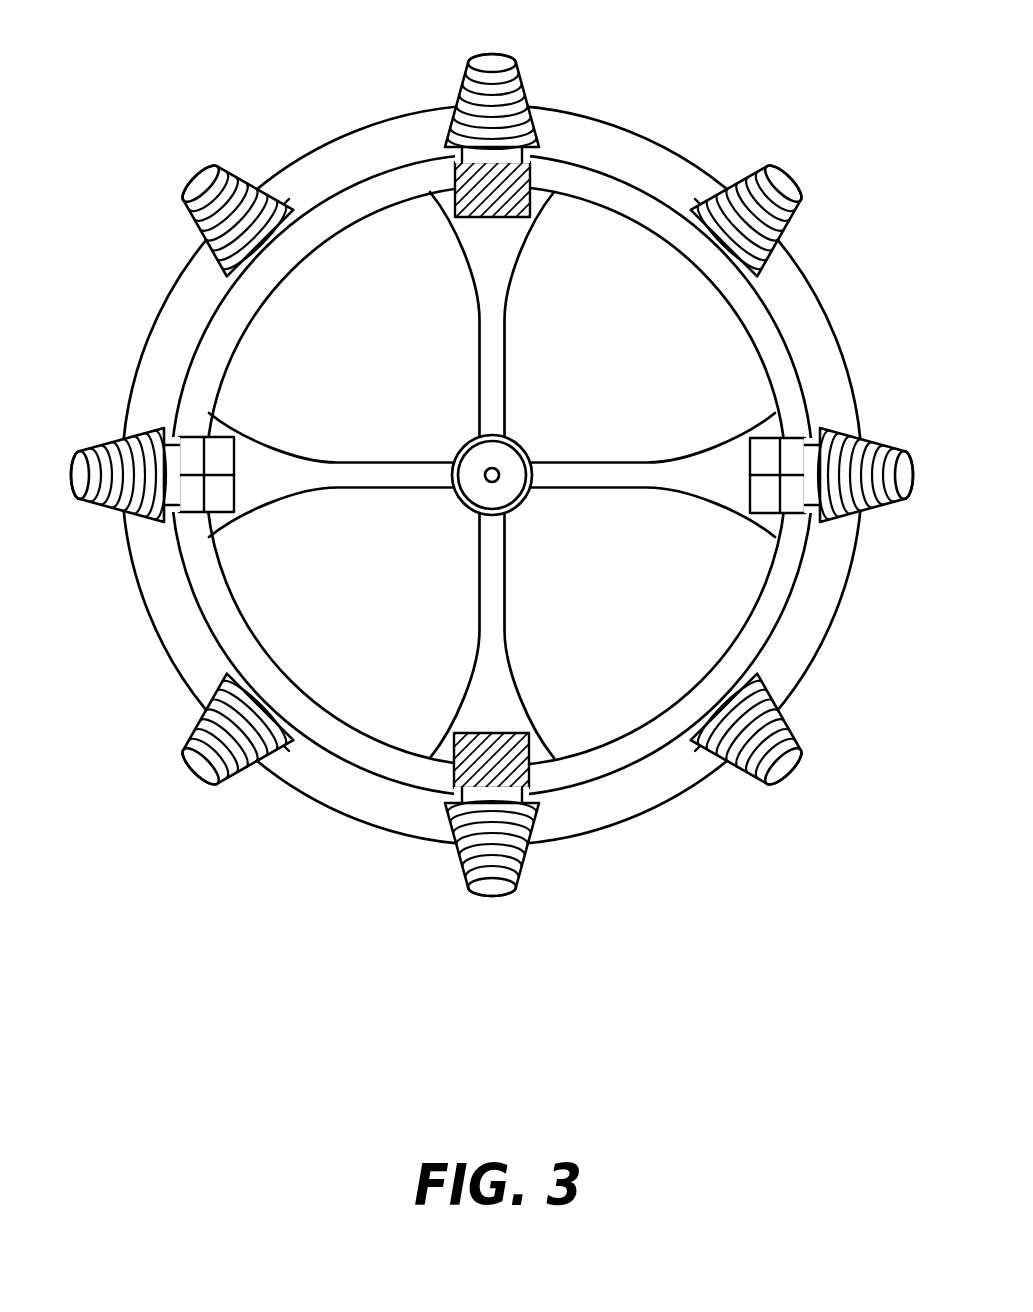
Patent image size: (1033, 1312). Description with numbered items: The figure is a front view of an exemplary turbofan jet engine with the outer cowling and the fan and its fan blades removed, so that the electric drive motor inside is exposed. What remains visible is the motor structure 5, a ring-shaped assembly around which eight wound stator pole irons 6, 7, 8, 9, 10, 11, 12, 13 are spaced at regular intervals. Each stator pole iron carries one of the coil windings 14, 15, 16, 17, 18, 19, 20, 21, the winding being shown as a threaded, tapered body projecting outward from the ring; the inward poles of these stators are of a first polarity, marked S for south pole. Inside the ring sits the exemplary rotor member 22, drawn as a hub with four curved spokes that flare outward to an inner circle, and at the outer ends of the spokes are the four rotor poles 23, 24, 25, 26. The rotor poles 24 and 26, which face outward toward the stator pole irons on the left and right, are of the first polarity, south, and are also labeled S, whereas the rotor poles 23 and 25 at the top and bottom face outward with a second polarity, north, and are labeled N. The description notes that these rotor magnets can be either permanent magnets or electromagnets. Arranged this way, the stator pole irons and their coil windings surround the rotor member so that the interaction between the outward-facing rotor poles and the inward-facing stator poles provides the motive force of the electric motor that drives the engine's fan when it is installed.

The motor structure 5 is at (818, 290).
The wound stator pole iron 6 is at (492, 86).
The wound stator pole iron 7 is at (756, 211).
The wound stator pole iron 8 is at (877, 475).
The wound stator pole iron 9 is at (756, 739).
The wound stator pole iron 10 is at (492, 865).
The wound stator pole iron 11 is at (228, 739).
The wound stator pole iron 12 is at (107, 475).
The wound stator pole iron 13 is at (228, 211).
The coil winding 14 is at (508, 160).
The coil winding 15 is at (790, 232).
The coil winding 16 is at (812, 428).
The coil winding 17 is at (802, 790).
The coil winding 18 is at (463, 862).
The coil winding 19 is at (198, 720).
The coil winding 20 is at (135, 428).
The coil winding 21 is at (248, 180).
The rotor member 22 is at (510, 297).
The rotor pole 23 is at (455, 182).
The rotor pole 24 is at (815, 508).
The rotor pole 25 is at (532, 785).
The rotor pole 26 is at (200, 512).
The south pole S is at (455, 172).
The north pole N is at (508, 155).